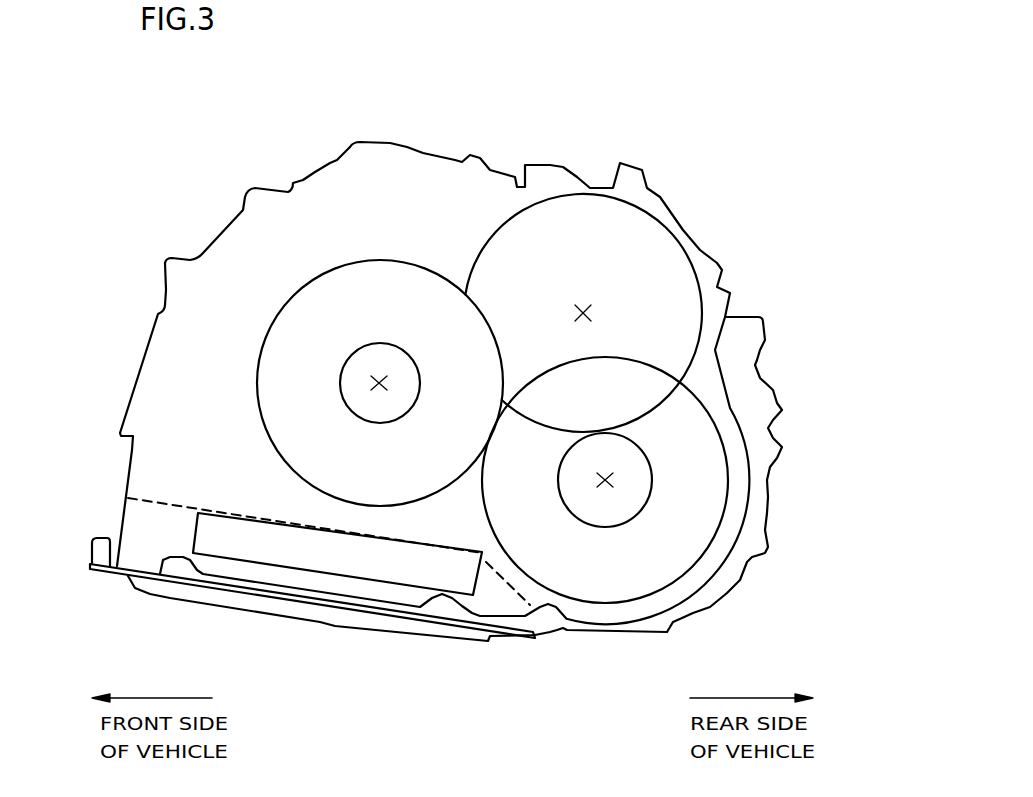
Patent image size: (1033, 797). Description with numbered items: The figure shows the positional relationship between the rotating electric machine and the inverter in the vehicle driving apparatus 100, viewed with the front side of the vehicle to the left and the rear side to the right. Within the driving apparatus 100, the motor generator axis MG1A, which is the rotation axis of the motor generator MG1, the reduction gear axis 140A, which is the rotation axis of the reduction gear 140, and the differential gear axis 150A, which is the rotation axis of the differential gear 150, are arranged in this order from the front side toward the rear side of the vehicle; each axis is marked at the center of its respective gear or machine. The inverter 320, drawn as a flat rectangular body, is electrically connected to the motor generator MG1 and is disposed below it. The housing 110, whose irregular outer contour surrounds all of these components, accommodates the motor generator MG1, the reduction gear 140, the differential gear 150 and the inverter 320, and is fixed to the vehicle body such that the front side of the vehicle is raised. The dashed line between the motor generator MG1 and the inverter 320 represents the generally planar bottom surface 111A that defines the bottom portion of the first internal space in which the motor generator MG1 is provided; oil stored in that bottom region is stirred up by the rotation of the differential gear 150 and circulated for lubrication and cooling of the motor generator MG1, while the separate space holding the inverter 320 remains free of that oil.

The driving apparatus 100 is at (570, 90).
The housing 110 is at (420, 150).
The bottom surface 111A is at (350, 532).
The motor generator MG1 is at (338, 249).
The motor generator axis MG1A is at (376, 383).
The reduction gear 140 is at (623, 184).
The reduction gear axis 140A is at (583, 305).
The differential gear 150 is at (654, 612).
The differential gear axis 150A is at (604, 488).
The inverter 320 is at (342, 547).